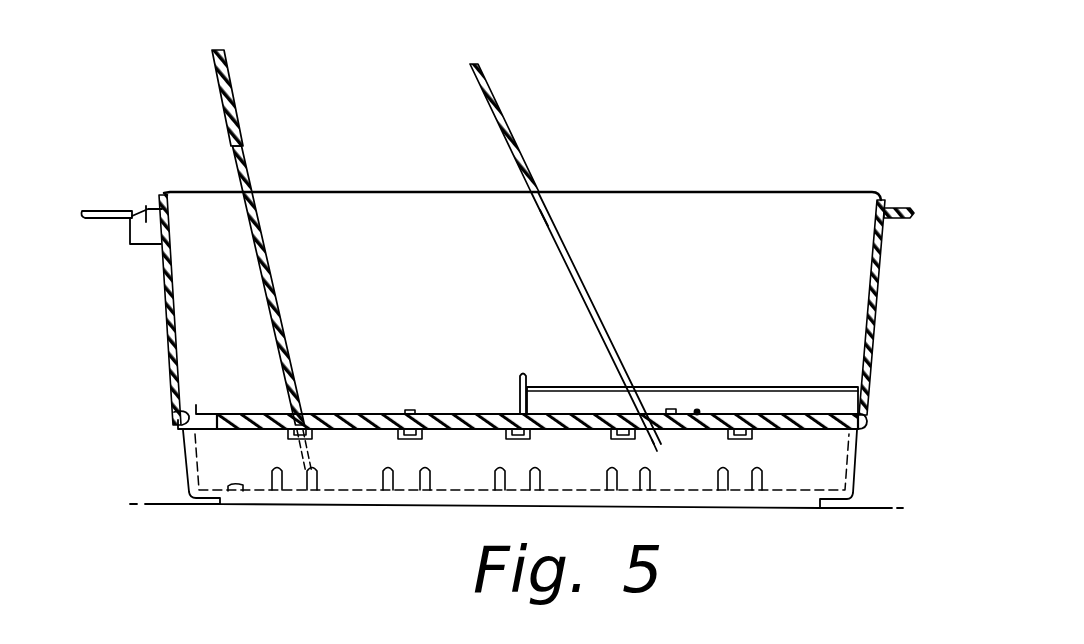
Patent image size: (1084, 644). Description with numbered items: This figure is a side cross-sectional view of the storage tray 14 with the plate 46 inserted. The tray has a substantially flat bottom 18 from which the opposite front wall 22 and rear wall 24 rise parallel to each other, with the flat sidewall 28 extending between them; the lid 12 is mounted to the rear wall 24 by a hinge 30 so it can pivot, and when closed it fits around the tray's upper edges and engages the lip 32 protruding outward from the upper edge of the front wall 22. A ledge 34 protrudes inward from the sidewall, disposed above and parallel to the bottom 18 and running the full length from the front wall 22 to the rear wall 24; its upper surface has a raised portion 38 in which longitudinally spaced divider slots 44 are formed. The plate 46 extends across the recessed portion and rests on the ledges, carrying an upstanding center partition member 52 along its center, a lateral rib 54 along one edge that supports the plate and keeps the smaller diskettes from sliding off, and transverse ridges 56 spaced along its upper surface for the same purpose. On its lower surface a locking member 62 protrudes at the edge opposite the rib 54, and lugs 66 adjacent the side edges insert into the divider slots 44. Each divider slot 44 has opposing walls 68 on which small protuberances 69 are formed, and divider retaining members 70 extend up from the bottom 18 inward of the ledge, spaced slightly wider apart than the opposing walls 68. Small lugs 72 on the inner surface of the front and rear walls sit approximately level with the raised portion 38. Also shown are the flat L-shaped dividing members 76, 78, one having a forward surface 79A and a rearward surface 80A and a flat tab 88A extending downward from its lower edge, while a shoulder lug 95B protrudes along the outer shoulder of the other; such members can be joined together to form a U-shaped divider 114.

The lid 12 is at (110, 210).
The storage tray 14 is at (163, 338).
The bottom 18 is at (243, 491).
The front wall 22 is at (878, 280).
The rear wall 24 is at (163, 296).
The sidewall 28 is at (740, 208).
The hinge 30 is at (146, 206).
The lip 32 is at (897, 206).
The ledge 34 is at (197, 404).
The raised portion 38 is at (231, 413).
The divider slots 44 is at (740, 411).
The plate 46 is at (672, 409).
The center partition member 52 is at (832, 388).
The lateral rib 54 is at (526, 378).
The transverse ridges 56 is at (697, 411).
The locking member 62 is at (866, 422).
The lugs 66 is at (626, 433).
The opposing walls 68 is at (405, 411).
The protuberances 69 is at (512, 411).
The divider retaining members 70 is at (376, 490).
The lugs 72 is at (177, 404).
The dividing member 76 is at (542, 190).
The dividing member 78 is at (268, 255).
The forward surface 79A is at (495, 100).
The rearward surface 80A is at (537, 215).
The tab 88A is at (660, 444).
The shoulder lug 95B is at (304, 435).
The U-shaped divider 114 is at (258, 157).